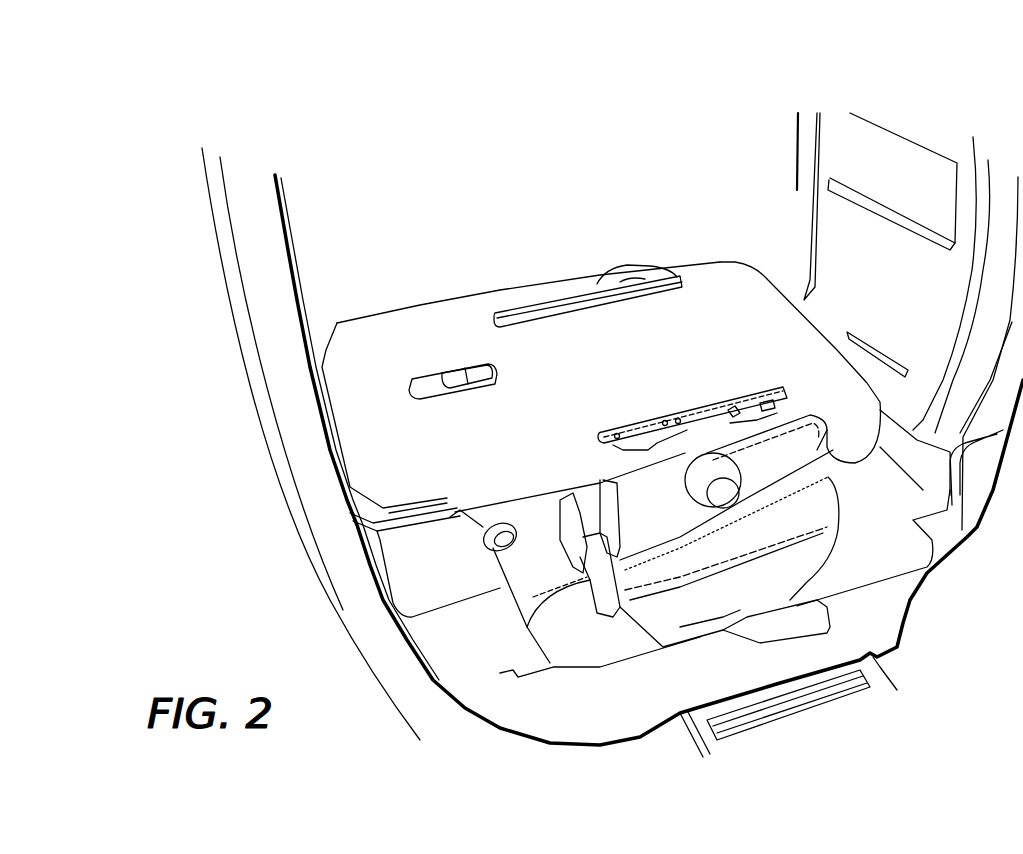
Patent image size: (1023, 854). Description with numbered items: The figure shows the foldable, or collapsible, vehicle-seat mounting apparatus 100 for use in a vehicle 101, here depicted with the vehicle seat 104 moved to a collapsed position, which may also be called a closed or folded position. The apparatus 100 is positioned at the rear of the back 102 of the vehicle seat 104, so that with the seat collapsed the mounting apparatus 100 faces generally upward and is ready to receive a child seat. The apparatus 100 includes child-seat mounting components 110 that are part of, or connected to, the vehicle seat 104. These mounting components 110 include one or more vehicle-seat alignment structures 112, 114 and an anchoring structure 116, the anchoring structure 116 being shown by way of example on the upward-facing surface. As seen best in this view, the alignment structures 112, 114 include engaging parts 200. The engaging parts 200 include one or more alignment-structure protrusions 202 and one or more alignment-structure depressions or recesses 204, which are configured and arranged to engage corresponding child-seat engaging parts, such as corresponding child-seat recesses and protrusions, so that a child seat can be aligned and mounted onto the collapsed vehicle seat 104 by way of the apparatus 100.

The vehicle-seat mounting apparatus 100 is at (394, 148).
The vehicle 101 is at (763, 89).
The back 102 is at (519, 467).
The vehicle seat 104 is at (762, 222).
The child-seat mounting components 110 is at (484, 223).
The vehicle-seat alignment structure 112 is at (500, 303).
The vehicle-seat alignment structure 114 is at (699, 388).
The anchoring structure 116 is at (441, 351).
The engaging parts 200 is at (613, 147).
The alignment-structure protrusion 202 is at (744, 388).
The alignment-structure depression 204 is at (812, 365).